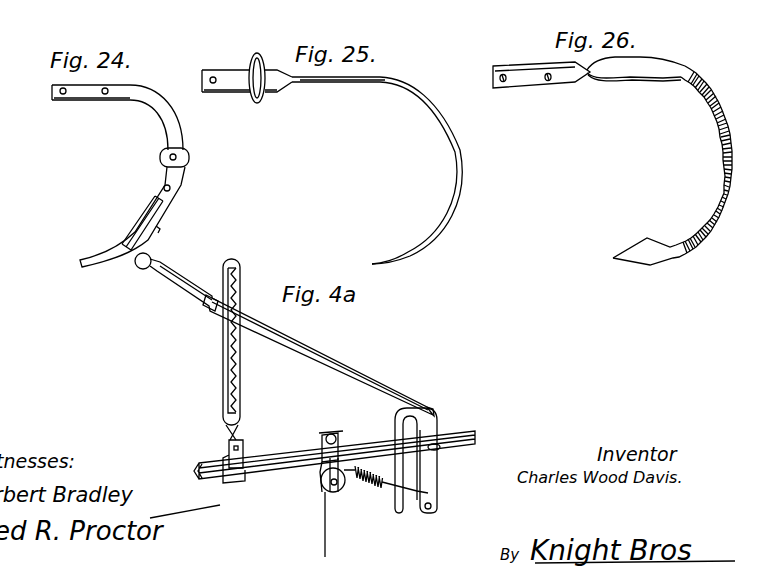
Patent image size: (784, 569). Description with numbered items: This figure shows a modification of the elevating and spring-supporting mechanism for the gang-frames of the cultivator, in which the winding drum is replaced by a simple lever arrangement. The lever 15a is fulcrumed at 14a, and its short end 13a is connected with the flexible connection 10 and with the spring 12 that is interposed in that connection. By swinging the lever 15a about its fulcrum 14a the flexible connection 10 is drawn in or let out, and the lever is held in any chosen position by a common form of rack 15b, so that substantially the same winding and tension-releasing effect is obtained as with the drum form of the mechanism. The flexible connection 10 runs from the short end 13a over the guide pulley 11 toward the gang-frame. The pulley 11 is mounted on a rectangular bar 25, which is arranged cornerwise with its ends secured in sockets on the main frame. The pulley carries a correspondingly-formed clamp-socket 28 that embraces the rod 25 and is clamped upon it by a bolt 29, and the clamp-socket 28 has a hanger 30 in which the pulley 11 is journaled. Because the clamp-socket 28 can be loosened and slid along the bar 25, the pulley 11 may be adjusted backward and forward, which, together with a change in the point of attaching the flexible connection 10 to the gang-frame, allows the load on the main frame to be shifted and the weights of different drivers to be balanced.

The lever 15a is at (357, 378).
The rack 15b is at (226, 348).
The rectangular bar 25 is at (207, 465).
The clamp-socket 28 is at (338, 449).
The bolt 29 is at (320, 438).
The hanger 30 is at (322, 478).
The pulley 11 is at (326, 494).
The spring 12 is at (368, 483).
The flexible connection 10 is at (390, 490).
The short end of lever 13a is at (439, 486).
The fulcrum 14a is at (441, 451).